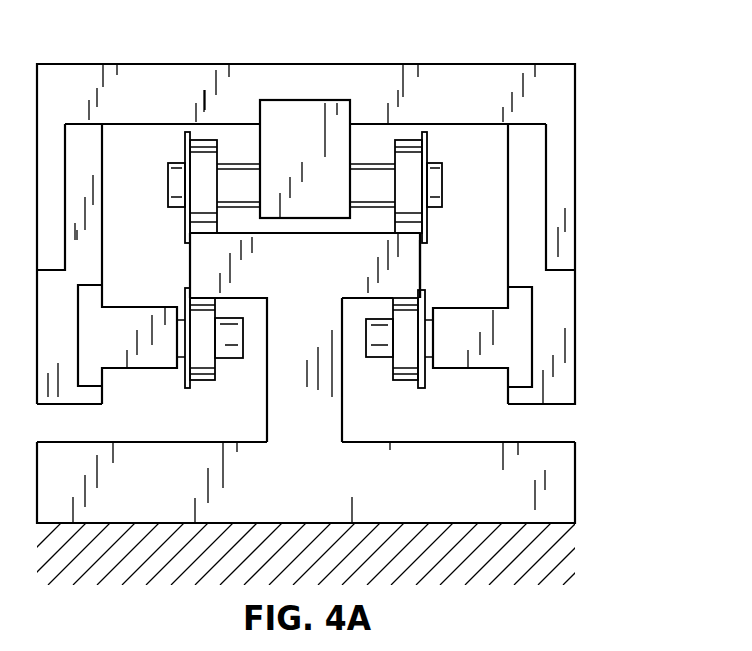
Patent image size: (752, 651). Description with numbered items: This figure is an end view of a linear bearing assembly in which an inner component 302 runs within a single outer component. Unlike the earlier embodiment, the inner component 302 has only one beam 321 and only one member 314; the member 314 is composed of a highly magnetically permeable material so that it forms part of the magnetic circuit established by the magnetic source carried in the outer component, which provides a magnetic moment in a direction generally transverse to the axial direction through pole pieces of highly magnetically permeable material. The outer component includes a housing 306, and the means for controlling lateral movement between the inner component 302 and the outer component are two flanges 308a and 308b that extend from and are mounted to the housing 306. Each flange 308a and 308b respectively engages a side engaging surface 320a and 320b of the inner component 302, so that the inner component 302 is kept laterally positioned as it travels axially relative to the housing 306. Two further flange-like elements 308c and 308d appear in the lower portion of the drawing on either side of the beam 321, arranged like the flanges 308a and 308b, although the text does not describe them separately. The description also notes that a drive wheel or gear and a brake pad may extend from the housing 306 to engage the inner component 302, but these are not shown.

The inner component 302 is at (583, 483).
The housing 306 is at (463, 83).
The flange 308a is at (185, 225).
The flange 308b is at (427, 226).
The roller 308c is at (187, 382).
The roller 308d is at (430, 383).
The member 314 is at (328, 285).
The side engaging surface 320a is at (190, 259).
The side engaging surface 320b is at (422, 262).
The beam 321 is at (343, 387).